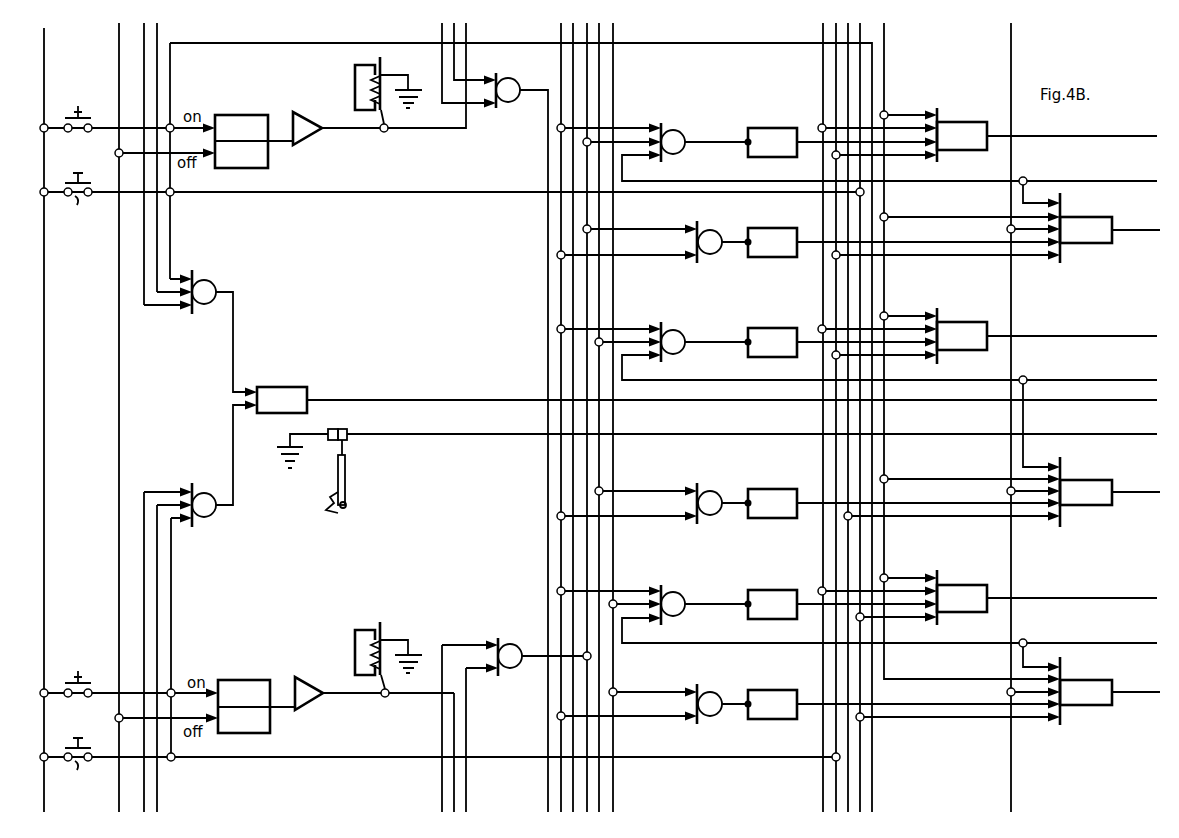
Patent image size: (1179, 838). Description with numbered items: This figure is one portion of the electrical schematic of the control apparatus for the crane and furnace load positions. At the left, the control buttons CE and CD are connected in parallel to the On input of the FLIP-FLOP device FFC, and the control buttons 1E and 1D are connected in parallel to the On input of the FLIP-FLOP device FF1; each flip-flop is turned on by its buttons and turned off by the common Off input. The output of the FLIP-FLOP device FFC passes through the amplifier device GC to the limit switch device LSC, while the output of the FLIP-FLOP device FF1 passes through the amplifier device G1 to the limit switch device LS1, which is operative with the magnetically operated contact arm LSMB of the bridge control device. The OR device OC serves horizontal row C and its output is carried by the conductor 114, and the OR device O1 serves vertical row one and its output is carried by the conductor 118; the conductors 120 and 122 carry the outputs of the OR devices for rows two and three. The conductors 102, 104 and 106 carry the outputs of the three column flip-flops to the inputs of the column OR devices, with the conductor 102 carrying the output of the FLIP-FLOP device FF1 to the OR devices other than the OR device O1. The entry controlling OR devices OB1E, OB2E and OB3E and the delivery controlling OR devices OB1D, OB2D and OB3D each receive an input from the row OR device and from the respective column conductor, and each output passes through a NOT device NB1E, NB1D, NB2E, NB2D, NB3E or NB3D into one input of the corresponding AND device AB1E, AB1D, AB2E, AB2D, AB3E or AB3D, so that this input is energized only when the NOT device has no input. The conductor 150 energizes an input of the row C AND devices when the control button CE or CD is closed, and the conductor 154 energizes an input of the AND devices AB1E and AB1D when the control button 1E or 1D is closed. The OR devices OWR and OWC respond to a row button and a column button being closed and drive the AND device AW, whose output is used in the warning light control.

The conductor 150 is at (279, 48).
The conductor 114 is at (548, 167).
The conductor 118 is at (587, 544).
The conductor 120 is at (599, 562).
The conductor 122 is at (611, 580).
The conductor 102 is at (455, 715).
The conductor 104 is at (442, 739).
The conductor 106 is at (467, 728).
The conductor 154 is at (348, 750).
The control button CE is at (123, 106).
The control button CD is at (452, 197).
The control button 1E is at (125, 672).
The control button 1D is at (80, 762).
The FLIP-FLOP device FFC is at (261, 109).
The amplifier device GC is at (308, 123).
The limit switch device LSC is at (377, 71).
The OR device OC is at (514, 88).
The OR device OWR is at (209, 282).
The OR device OWC is at (209, 518).
The AND device AW is at (302, 380).
The magnetically operated contact arm LSMB is at (346, 478).
The FLIP-FLOP device FF1 is at (262, 672).
The amplifier device G1 is at (314, 689).
The limit switch device LS1 is at (377, 633).
The OR device O1 is at (512, 643).
The OR device OB1E is at (683, 135).
The NOT device NB1E is at (794, 125).
The OR device OB1D is at (716, 252).
The NOT device NB1D is at (796, 225).
The OR device OB2E is at (680, 352).
The NOT device NB2E is at (797, 326).
The OR device OB2D is at (717, 513).
The NOT device NB2D is at (797, 488).
The OR device OB3E is at (686, 614).
The NOT device NB3E is at (797, 588).
The OR device OB3D is at (717, 714).
The NOT device NB3D is at (797, 688).
The AND device AB1E is at (992, 119).
The AND device AB1D is at (1117, 213).
The AND device AB2E is at (992, 319).
The AND device AB2D is at (1117, 475).
The AND device AB3E is at (992, 581).
The AND device AB3D is at (1119, 676).